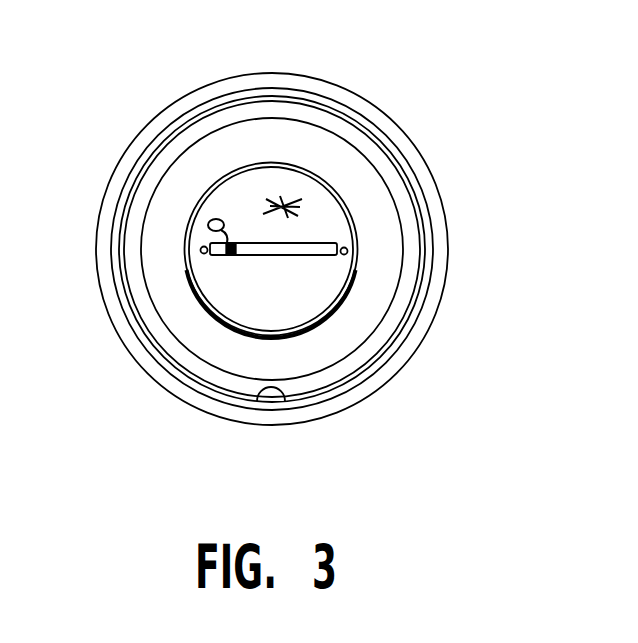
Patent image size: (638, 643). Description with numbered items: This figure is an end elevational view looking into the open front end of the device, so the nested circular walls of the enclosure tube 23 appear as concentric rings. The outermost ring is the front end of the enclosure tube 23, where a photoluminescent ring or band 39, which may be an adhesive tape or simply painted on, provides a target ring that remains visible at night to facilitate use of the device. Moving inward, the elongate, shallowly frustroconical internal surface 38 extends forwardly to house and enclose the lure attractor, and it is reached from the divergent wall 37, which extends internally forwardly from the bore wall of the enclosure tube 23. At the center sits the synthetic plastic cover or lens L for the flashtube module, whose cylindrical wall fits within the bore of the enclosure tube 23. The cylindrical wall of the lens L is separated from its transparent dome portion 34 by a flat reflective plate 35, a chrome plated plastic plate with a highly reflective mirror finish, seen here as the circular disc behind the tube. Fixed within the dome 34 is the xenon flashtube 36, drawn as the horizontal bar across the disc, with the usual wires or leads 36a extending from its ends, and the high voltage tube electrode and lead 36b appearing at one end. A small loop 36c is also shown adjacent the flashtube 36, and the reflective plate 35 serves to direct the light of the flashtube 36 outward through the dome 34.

The enclosure tube 23 is at (443, 305).
The frustroconical internal surface 38 is at (292, 107).
The divergent wall 37 is at (361, 175).
The flat reflective plate 35 is at (307, 293).
The lens L is at (232, 288).
The xenon flashtube 36 is at (305, 243).
The wires or leads 36a is at (348, 251).
The high voltage tube electrode and lead 36b is at (200, 250).
The loop knot 36c is at (213, 219).
The transparent dome portion 34 is at (262, 194).
The photoluminescent ring 39 is at (263, 388).